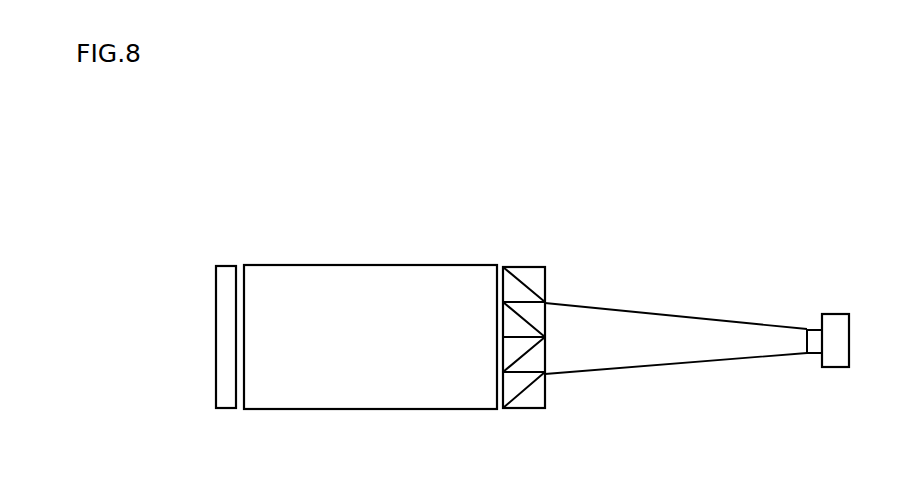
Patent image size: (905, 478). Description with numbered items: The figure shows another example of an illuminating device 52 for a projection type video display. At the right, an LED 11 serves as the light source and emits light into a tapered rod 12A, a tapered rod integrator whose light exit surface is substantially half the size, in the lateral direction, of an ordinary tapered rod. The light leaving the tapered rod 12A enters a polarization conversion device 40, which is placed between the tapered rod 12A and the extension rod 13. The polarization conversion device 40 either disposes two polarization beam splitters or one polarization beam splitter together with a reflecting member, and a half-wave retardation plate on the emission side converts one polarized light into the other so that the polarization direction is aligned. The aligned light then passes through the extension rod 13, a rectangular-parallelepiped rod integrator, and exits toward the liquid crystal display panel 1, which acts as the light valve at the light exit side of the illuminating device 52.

The illuminating device 52 is at (458, 182).
The liquid crystal display panel 1 is at (228, 272).
The extension rod 13 is at (322, 275).
The polarization conversion device 40 is at (527, 272).
The tapered rod 12A is at (633, 325).
The LED 11 is at (837, 322).